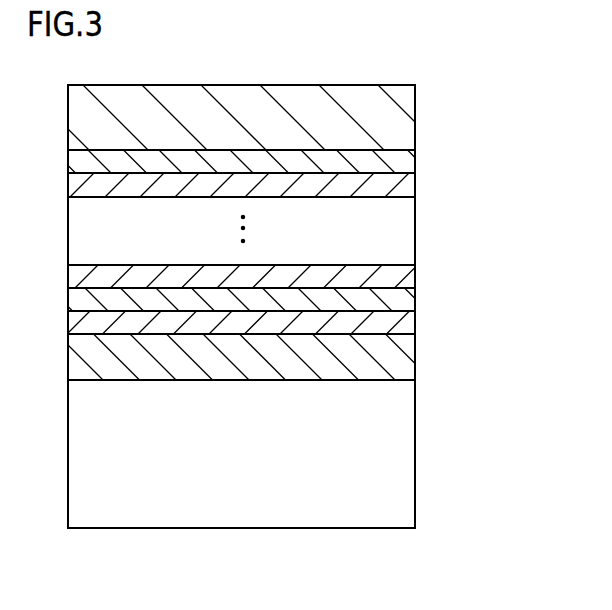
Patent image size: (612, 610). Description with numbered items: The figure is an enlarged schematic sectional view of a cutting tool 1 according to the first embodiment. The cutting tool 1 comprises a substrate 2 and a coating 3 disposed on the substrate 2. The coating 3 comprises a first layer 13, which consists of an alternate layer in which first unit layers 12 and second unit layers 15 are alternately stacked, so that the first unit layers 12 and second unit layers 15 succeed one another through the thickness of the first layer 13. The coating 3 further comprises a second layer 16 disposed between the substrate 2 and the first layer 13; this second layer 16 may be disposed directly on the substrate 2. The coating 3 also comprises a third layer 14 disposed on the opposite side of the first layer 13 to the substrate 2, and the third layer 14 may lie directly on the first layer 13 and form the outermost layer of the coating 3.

The cutting tool 1 is at (446, 41).
The substrate 2 is at (397, 458).
The coating 3 is at (549, 85).
The first unit layer 12 is at (403, 185).
The first layer 13 is at (502, 148).
The third layer 14 is at (397, 121).
The second unit layer 15 is at (403, 160).
The second layer 16 is at (400, 360).